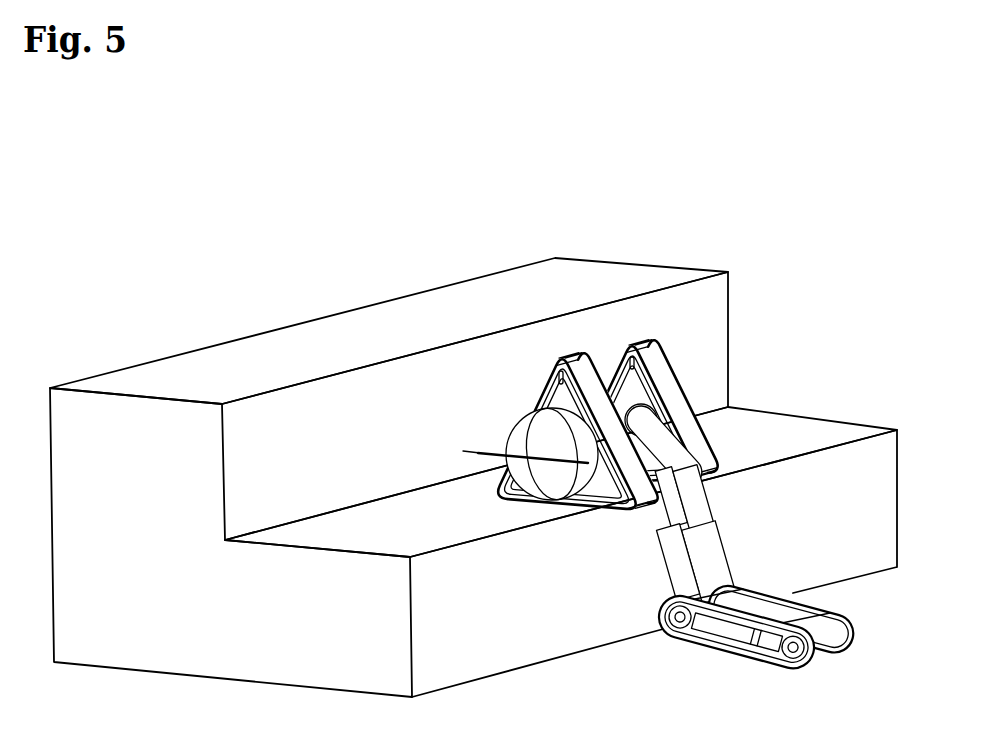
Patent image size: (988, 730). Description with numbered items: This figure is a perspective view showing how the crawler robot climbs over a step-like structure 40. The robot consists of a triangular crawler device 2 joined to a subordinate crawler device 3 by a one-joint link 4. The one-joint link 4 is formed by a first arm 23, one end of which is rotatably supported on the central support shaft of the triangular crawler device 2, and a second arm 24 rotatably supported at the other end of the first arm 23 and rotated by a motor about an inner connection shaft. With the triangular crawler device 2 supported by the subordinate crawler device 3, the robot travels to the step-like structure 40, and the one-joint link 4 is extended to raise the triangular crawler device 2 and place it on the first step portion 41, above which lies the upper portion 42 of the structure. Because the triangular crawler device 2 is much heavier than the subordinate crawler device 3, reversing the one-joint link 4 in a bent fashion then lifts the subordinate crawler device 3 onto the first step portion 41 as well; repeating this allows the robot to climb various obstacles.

The triangular crawler device 2 is at (508, 373).
The subordinate crawler device 3 is at (700, 658).
The one-joint link 4 is at (697, 505).
The first arm 23 is at (657, 452).
The second arm 24 is at (695, 553).
The step-like structure 40 is at (748, 307).
The first step portion 41 is at (790, 428).
The upper step surface 42 is at (573, 282).